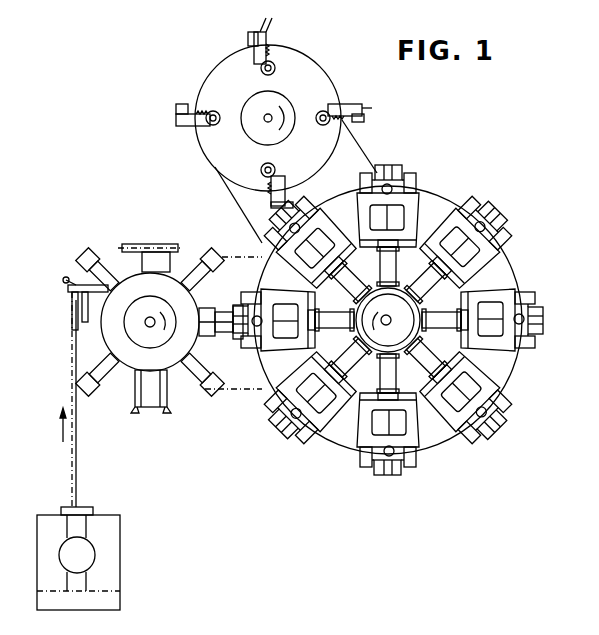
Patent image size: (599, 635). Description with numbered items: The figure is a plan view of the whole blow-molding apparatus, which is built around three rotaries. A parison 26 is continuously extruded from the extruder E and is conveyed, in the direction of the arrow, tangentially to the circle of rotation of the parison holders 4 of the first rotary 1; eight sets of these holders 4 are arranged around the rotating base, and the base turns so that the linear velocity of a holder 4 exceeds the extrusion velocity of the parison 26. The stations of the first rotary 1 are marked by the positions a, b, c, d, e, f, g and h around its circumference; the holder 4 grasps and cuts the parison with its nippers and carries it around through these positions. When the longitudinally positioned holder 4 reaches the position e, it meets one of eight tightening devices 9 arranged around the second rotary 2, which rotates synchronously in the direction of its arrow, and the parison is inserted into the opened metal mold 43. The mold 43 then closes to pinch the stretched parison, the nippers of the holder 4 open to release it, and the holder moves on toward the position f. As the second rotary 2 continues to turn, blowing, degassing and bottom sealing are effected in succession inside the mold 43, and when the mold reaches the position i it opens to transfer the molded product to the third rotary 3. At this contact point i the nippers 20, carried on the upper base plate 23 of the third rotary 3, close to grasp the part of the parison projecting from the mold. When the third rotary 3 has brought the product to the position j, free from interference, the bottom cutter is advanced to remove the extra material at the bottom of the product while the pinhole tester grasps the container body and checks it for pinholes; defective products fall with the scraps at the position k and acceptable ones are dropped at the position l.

The first rotary 1 is at (153, 339).
The second rotary 2 is at (374, 320).
The third rotary 3 is at (268, 118).
The parison holder 4 is at (205, 390).
The tightening device 9 is at (311, 399).
The nippers 20 is at (197, 120).
The upper base plate 23 is at (213, 72).
The parison 26 is at (76, 455).
The metal mold 43 is at (273, 430).
The extruder E is at (118, 522).
The position a is at (112, 322).
The position b is at (125, 293).
The position c is at (151, 285).
The position d is at (173, 293).
The position e is at (185, 322).
The position f is at (175, 348).
The position g is at (148, 357).
The position h is at (125, 348).
The position i is at (343, 162).
The position j is at (233, 205).
The position k is at (269, 46).
The position l is at (347, 113).